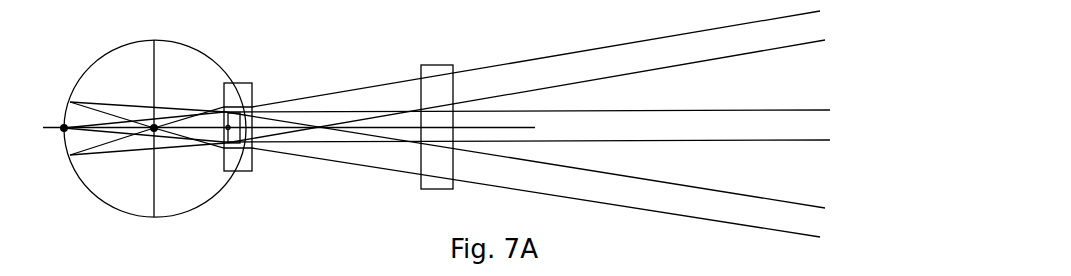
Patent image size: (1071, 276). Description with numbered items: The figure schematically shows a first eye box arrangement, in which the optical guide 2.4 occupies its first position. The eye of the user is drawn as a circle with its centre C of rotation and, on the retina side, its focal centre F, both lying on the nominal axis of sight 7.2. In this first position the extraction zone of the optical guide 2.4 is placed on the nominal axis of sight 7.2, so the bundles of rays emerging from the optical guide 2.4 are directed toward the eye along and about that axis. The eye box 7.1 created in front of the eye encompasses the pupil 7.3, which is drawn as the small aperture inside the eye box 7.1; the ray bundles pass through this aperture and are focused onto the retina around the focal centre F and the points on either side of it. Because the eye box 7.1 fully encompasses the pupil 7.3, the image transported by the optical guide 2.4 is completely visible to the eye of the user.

The focal centre of the eye F is at (61, 126).
The centre of rotation of the eye C is at (153, 125).
The eye box 7.1 is at (236, 83).
The nominal axis of sight 7.2 is at (535, 128).
The pupil 7.3 is at (237, 132).
The optical guide 2.4 is at (432, 65).